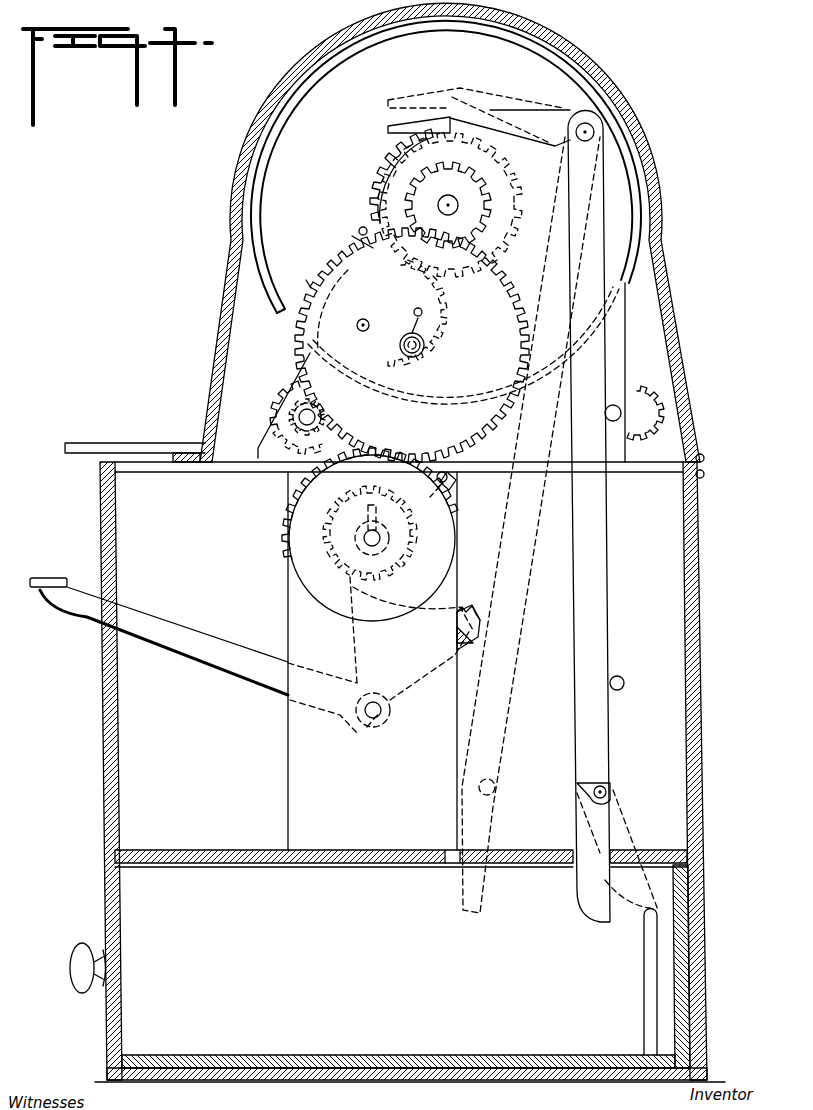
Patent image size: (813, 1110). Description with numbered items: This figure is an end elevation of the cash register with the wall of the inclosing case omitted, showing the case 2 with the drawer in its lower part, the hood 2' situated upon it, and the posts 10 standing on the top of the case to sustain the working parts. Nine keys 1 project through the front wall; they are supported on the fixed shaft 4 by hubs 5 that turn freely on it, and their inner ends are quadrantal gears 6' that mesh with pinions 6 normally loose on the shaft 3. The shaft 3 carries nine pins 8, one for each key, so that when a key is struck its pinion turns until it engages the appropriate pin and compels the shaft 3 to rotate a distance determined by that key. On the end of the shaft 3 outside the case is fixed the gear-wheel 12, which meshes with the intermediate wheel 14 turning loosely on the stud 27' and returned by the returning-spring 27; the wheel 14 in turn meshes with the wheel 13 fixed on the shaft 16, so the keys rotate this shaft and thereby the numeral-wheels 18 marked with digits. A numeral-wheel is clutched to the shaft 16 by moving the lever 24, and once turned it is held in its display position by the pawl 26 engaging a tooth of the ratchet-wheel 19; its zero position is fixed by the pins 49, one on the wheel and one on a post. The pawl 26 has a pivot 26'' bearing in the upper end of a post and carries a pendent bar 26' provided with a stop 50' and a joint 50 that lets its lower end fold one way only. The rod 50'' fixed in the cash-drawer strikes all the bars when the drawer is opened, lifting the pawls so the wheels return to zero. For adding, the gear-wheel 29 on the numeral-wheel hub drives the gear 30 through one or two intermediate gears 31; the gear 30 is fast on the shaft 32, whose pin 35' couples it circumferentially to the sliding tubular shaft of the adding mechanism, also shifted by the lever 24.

The keys 1 is at (186, 641).
The case 2 is at (397, 768).
The hood 2' is at (450, 232).
The shaft 3 is at (378, 541).
The shaft 4 is at (377, 705).
The hubs 5 is at (367, 727).
The pinions 6 is at (391, 628).
The quadrantal gears 6' is at (468, 620).
The pins 8 is at (376, 520).
The posts 10 is at (623, 333).
The gear-wheel 12 is at (286, 521).
The wheel 13 is at (478, 181).
The intermediate wheel 14 is at (505, 296).
The shaft 16 is at (448, 200).
The numeral-wheels 18 is at (272, 268).
The ratchet-wheel 19 is at (375, 178).
The lever 24 is at (128, 443).
The pawl 26 is at (494, 497).
The pendent bar 26' is at (605, 517).
The pivot 26'' is at (588, 145).
The returning-spring 27 is at (401, 319).
The stud 27' is at (436, 345).
The gear-wheel 29 is at (388, 161).
The gear 30 is at (276, 403).
The intermediate gears 31 is at (308, 281).
The shaft 32 is at (298, 415).
The pin 35' is at (290, 399).
The pins 49 is at (358, 232).
The joint 50 is at (617, 842).
The stop 50' is at (635, 680).
The rod 50'' is at (629, 982).